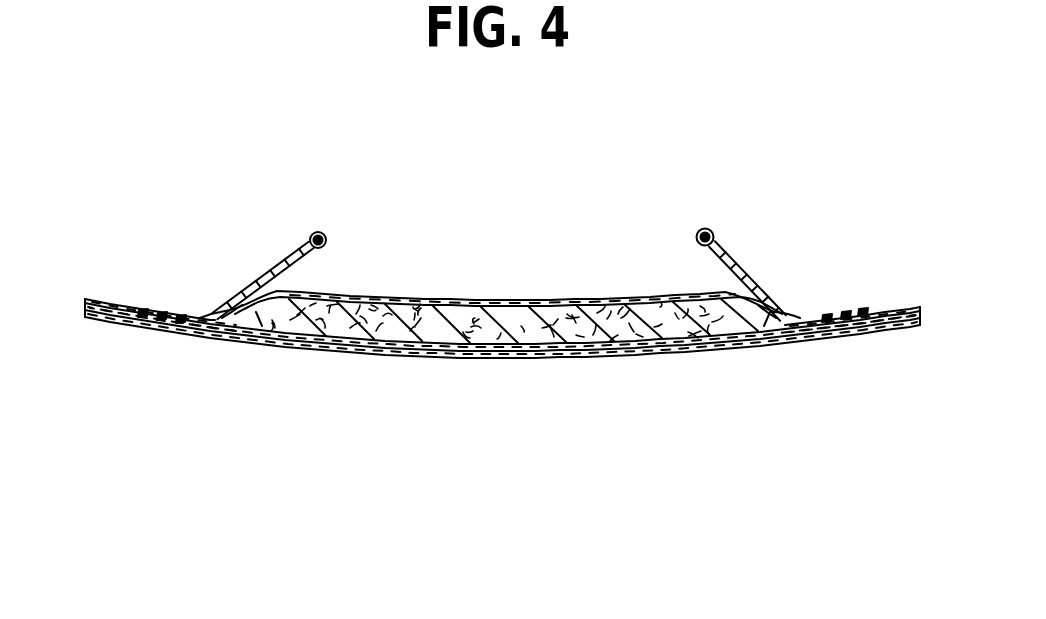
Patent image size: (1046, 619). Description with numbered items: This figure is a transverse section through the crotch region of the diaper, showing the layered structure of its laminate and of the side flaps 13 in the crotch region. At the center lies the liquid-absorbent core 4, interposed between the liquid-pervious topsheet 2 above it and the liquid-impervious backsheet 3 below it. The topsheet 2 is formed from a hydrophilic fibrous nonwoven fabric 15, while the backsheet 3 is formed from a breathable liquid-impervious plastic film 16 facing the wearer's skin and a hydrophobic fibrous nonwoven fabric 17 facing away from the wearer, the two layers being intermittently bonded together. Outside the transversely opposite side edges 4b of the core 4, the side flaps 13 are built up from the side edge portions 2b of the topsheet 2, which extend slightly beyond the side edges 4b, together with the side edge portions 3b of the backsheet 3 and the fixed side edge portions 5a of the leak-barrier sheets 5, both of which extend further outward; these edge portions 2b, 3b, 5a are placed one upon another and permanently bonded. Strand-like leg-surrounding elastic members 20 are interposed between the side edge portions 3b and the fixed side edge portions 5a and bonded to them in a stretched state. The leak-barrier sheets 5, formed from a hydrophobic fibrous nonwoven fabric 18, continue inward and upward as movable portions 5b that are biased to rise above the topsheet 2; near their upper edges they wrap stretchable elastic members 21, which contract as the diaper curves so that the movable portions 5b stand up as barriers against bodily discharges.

The topsheet 2 is at (507, 300).
The side edge portions of the topsheet 2b is at (210, 307).
The backsheet 3 is at (628, 360).
The side edge portions of the backsheet 3b is at (103, 323).
The liquid-absorbent core 4 is at (570, 310).
The side edges of the core 4b is at (253, 339).
The leak-barrier sheets 5 is at (222, 305).
The fixed side edge portions of the leak-barrier sheets 5a is at (133, 300).
The movable portions of the leak-barrier sheets 5b is at (291, 258).
The side flap in the crotch region 13 is at (193, 339).
The hydrophilic fibrous nonwoven fabric 15 is at (438, 300).
The breathable liquid-impervious plastic film 16 is at (530, 360).
The hydrophobic fibrous nonwoven fabric 17 is at (450, 360).
The hydrophobic fibrous nonwoven fabric 18 is at (263, 273).
The leg-surrounding elastic members 20 is at (167, 325).
The stretchable elastic members 21 is at (325, 231).